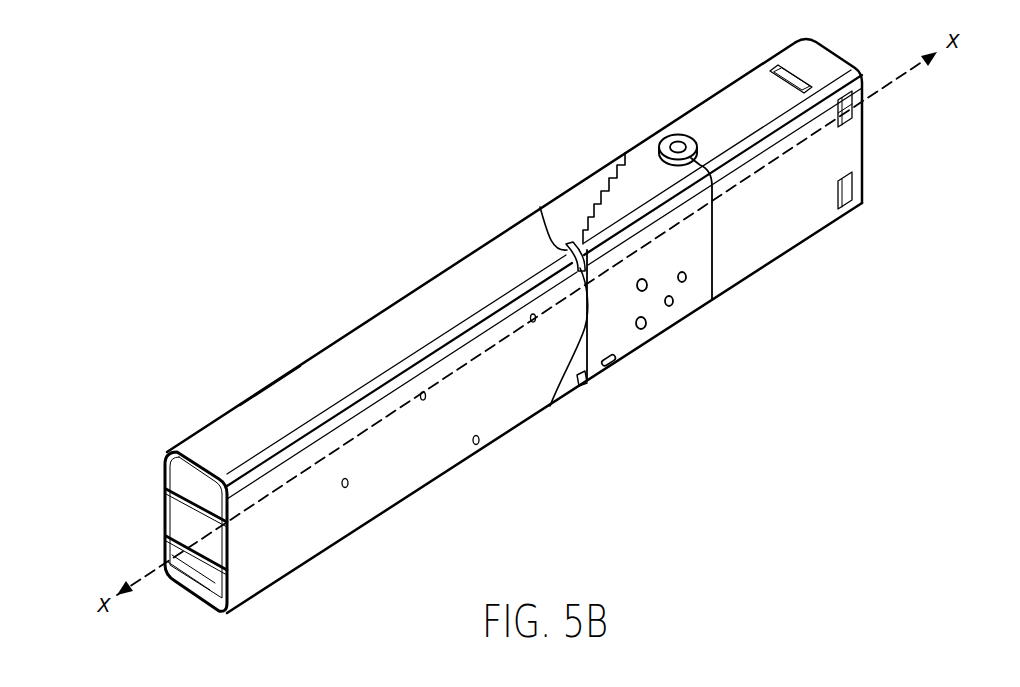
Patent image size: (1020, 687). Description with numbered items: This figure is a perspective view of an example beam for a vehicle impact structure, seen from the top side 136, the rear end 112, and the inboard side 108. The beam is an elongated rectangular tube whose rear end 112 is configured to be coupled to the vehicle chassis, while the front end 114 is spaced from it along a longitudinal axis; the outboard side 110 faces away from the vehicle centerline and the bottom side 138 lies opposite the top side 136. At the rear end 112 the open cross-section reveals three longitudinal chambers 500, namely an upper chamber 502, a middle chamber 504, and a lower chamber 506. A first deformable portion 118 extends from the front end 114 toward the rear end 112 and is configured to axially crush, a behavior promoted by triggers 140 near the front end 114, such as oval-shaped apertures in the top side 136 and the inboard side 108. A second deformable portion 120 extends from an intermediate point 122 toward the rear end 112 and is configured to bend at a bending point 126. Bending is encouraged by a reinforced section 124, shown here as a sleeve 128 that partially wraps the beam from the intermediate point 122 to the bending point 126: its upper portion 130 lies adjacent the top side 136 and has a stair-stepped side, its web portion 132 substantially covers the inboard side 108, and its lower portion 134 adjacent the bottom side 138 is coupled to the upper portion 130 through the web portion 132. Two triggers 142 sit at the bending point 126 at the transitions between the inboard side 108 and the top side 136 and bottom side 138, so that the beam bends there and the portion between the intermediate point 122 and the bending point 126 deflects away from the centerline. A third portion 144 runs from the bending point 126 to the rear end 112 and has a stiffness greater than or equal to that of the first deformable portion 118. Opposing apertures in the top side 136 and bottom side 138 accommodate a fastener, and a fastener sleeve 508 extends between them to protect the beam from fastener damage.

The inboard side 108 is at (358, 512).
The outboard side 110 is at (250, 396).
The rear end 112 is at (185, 462).
The front end 114 is at (822, 43).
The first deformable portion 118 is at (750, 83).
The second deformable portion 120 is at (602, 178).
The intermediate point 122 is at (712, 268).
The reinforced section 124 is at (662, 200).
The bending point 126 is at (550, 408).
The sleeve 128 is at (662, 322).
The upper portion 130 is at (656, 162).
The web portion 132 is at (693, 240).
The lower portion 134 is at (618, 364).
The top side 136 is at (478, 268).
The bottom side 138 is at (488, 449).
The triggers 140 is at (791, 72).
The triggers 142 is at (565, 247).
The third portion 144 is at (297, 366).
The chambers 500 is at (118, 487).
The upper chamber 502 is at (188, 486).
The middle chamber 504 is at (185, 530).
The lower chamber 506 is at (197, 590).
The fastener sleeve 508 is at (681, 135).